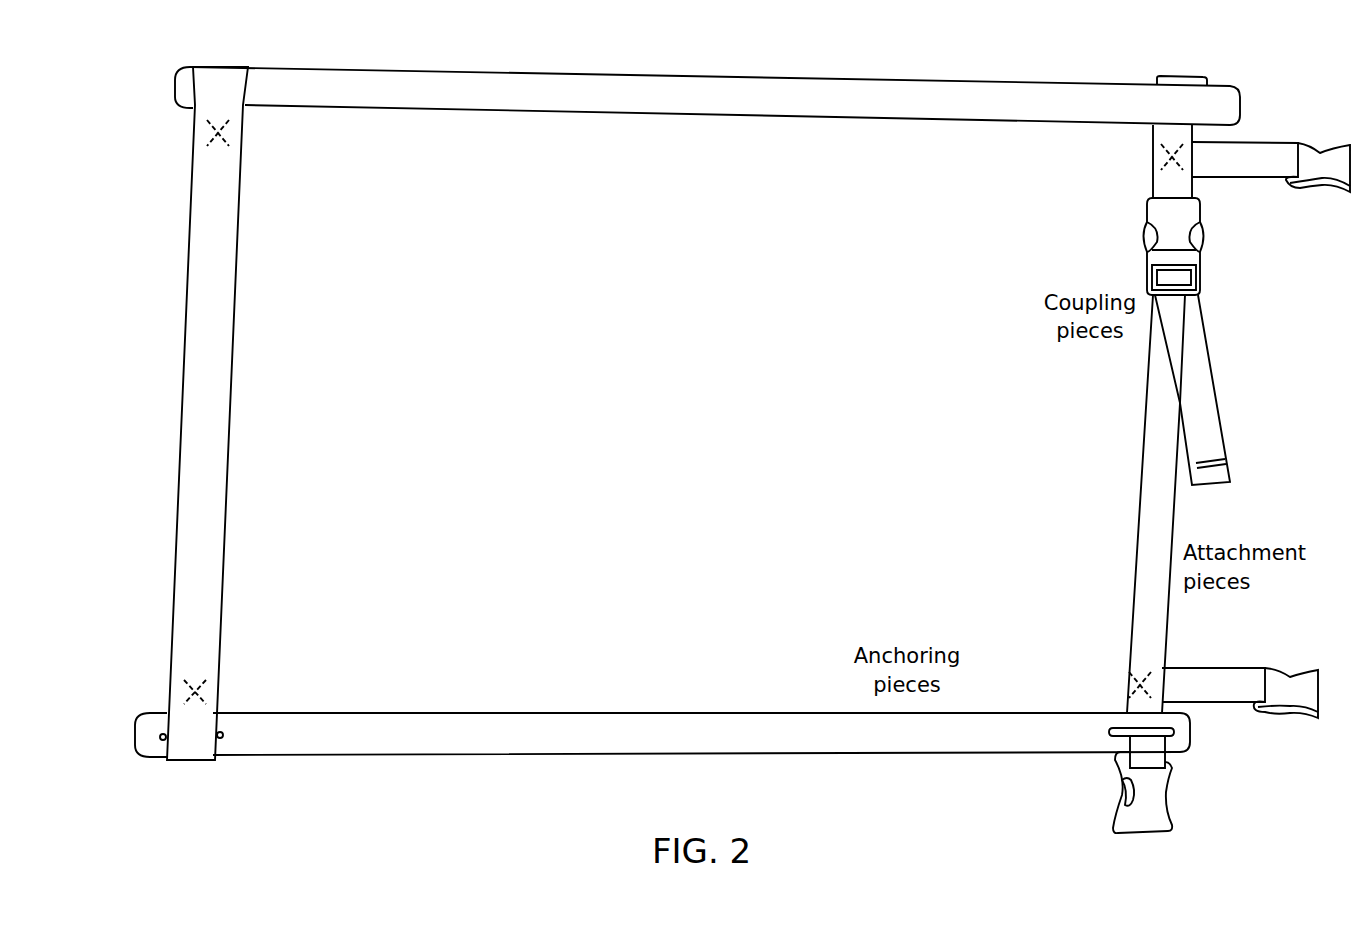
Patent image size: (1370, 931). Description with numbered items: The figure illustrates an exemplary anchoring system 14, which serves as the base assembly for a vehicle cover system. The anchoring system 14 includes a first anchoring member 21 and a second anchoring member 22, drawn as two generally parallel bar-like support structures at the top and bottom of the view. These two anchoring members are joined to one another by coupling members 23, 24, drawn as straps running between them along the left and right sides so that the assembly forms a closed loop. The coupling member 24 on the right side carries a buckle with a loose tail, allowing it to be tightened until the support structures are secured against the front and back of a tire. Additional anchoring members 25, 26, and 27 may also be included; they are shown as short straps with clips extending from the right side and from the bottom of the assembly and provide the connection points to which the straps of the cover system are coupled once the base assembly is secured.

The anchoring system 14 is at (142, 487).
The first anchoring member 21 is at (646, 711).
The second anchoring member 22 is at (658, 115).
The coupling member 23 is at (193, 257).
The coupling member 24 is at (1135, 548).
The additional anchoring member 25 is at (1300, 670).
The additional anchoring member 26 is at (1306, 192).
The additional anchoring member 27 is at (1168, 792).